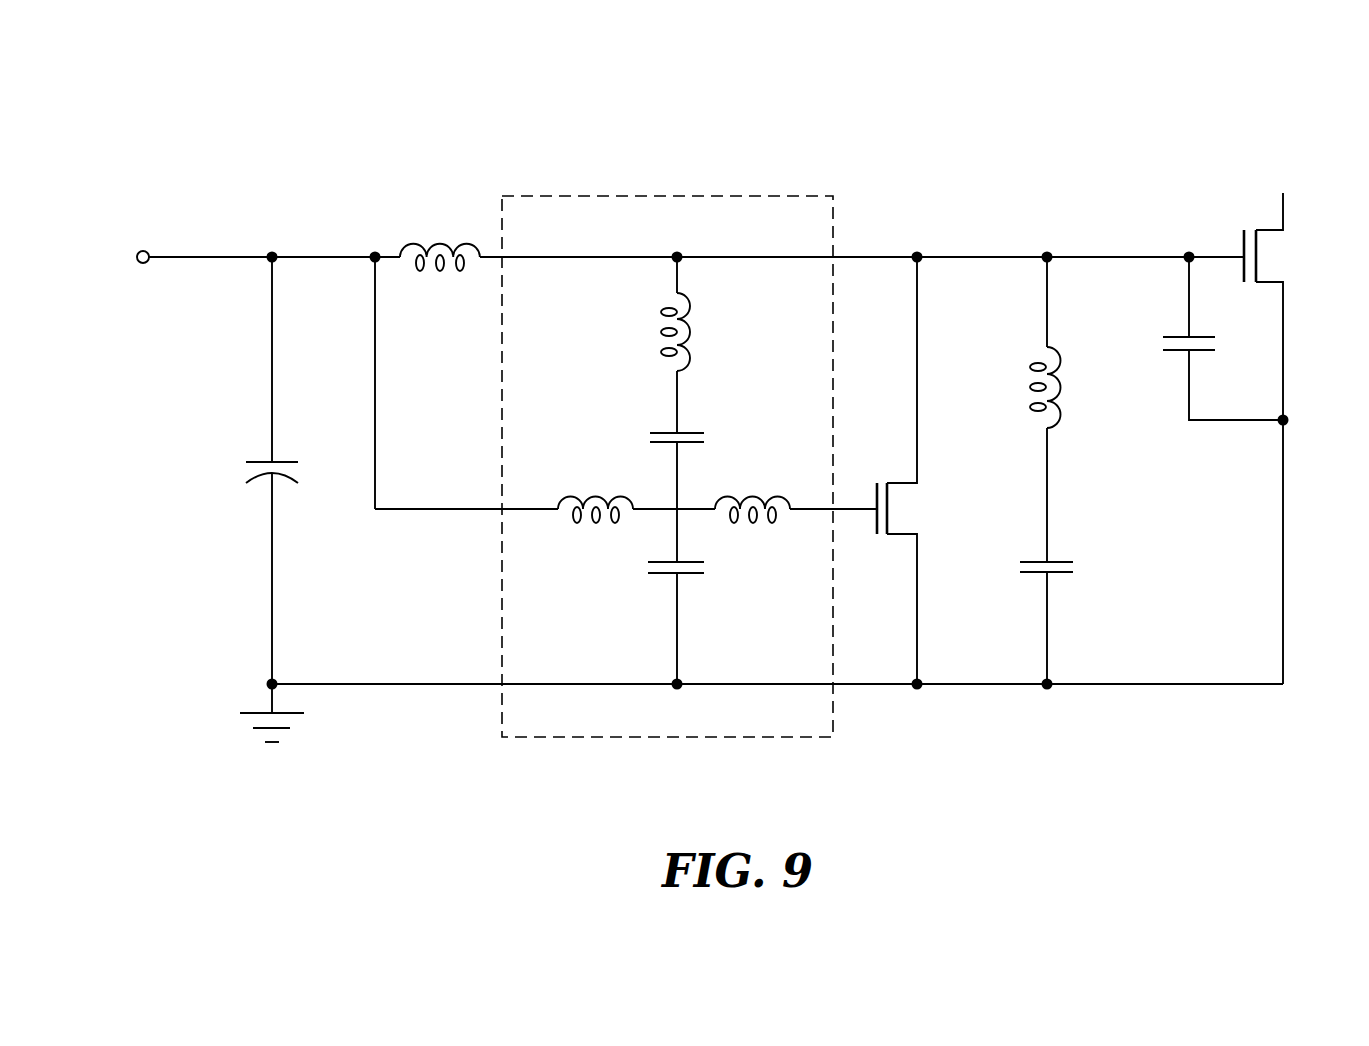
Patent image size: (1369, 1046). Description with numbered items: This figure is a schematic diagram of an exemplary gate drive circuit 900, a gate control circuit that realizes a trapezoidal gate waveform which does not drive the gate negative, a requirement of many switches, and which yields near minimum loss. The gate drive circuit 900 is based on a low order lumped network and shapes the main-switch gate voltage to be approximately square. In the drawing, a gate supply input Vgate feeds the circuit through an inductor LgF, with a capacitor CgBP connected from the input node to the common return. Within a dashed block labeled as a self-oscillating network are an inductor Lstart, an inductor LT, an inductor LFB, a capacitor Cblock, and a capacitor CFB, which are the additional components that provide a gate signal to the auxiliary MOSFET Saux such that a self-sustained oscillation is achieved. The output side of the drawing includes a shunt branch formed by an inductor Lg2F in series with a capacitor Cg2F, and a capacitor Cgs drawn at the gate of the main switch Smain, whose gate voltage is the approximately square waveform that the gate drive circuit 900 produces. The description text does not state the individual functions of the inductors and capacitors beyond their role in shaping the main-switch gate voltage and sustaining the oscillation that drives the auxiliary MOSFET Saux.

The gate drive circuit 900 is at (902, 104).
The gate supply voltage input Vgate is at (103, 239).
The gate filter inductor LgF is at (440, 235).
The gate bypass capacitor CgBP is at (240, 479).
The start-up inductor Lstart is at (595, 525).
The tuning inductor LT is at (752, 492).
The feedback inductor LFB is at (653, 332).
The DC blocking capacitor Cblock is at (653, 422).
The feedback capacitor CFB is at (682, 589).
The auxiliary MOSFET Saux is at (920, 470).
The second harmonic gate inductor Lg2F is at (1070, 387).
The second harmonic gate capacitor Cg2F is at (1059, 586).
The gate-source capacitor Cgs is at (1199, 363).
The main switch Smain is at (1289, 438).